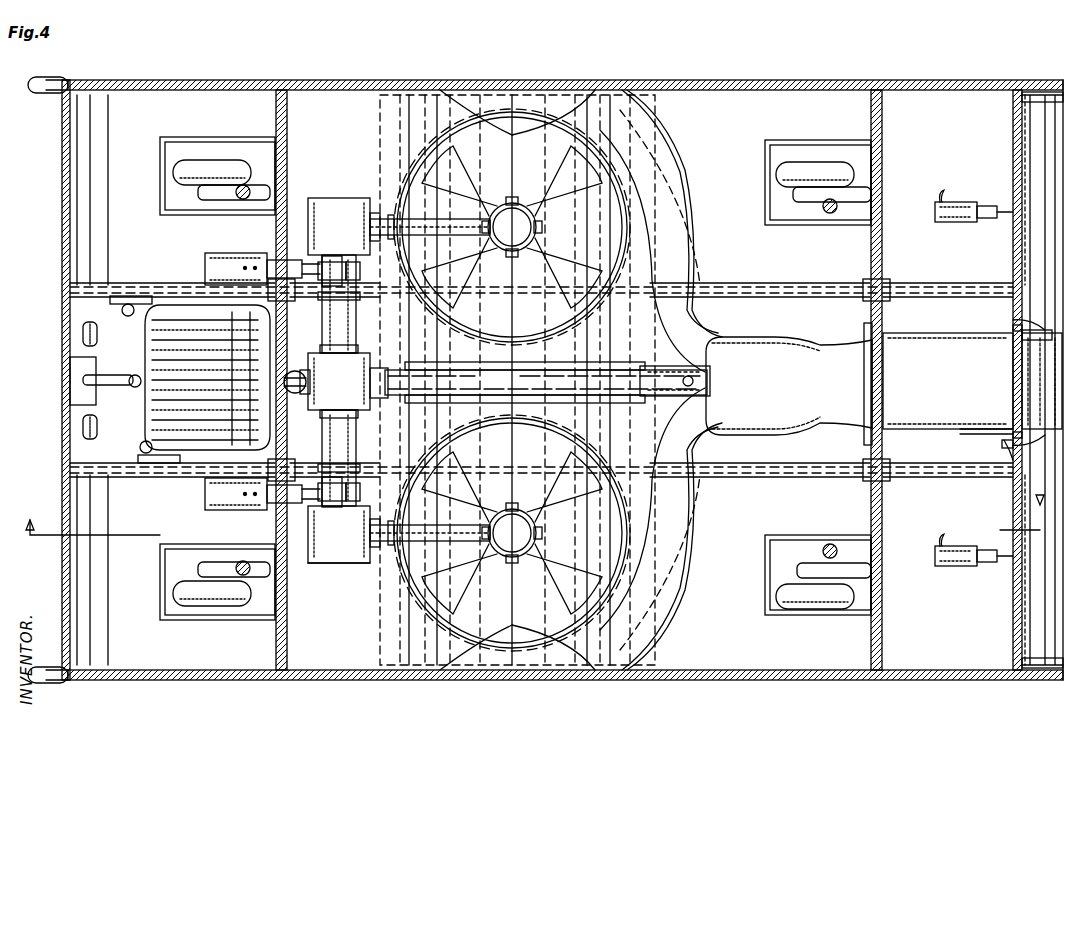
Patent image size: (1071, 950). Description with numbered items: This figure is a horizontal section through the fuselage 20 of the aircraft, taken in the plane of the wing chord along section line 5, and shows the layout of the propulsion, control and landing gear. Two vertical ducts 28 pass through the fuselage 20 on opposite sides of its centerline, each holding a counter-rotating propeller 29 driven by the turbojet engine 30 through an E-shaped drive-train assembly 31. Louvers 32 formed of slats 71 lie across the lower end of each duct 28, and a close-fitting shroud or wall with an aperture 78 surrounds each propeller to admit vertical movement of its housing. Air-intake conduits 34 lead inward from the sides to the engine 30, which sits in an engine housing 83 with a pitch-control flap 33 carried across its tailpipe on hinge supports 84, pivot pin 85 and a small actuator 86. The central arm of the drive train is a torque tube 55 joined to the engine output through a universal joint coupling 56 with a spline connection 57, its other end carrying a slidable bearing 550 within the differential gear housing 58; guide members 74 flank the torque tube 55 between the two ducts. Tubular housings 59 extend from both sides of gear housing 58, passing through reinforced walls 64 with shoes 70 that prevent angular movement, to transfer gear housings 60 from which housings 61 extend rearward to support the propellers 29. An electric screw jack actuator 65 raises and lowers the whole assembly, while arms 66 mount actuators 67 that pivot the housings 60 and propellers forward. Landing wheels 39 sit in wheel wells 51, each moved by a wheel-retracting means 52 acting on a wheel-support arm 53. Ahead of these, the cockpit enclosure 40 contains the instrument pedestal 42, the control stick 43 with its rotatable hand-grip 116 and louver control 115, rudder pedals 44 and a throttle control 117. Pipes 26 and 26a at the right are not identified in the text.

The fuselage 20 is at (60, 242).
The section line 5 is at (540, 512).
The pipe 26 is at (1030, 160).
The motor 26a is at (955, 220).
The duct 28 is at (620, 202).
The propeller 29 is at (532, 232).
The turbojet engine 30 is at (948, 381).
The drive-train assembly 31 is at (352, 570).
The louvers 32 is at (610, 185).
The pitch control flap 33 is at (1032, 378).
The air-intake conduit 34 is at (595, 92).
The landing wheel 39 is at (222, 165).
The cockpit enclosure 40 is at (110, 350).
The instrument pedestal 42 is at (70, 413).
The control stick 43 is at (128, 382).
The rudder pedals 44 is at (98, 333).
The wheel well 51 is at (207, 126).
The wheel-retracting means 52 is at (260, 185).
The wheel-support arm 53 is at (265, 203).
The torque tube 55 is at (546, 382).
The coupling 550 is at (385, 372).
The universal joint coupling means 56 is at (722, 402).
The spline connection 57 is at (650, 380).
The differential gear housing 58 is at (364, 378).
The tubular housing 59 is at (332, 310).
The transfer gear housing 60 is at (352, 186).
The tubular housing 61 is at (436, 228).
The reinforced wall 64 is at (372, 260).
The electric screw jack actuator 65 is at (295, 365).
The forwardly extending arm 66 is at (316, 268).
The actuator 67 is at (215, 262).
The shoe 70 is at (358, 297).
The louver slats 71 is at (515, 135).
The guide 74 is at (587, 370).
The aperture 78 is at (400, 226).
The engine housing 83 is at (978, 430).
The hinge support 84 is at (1010, 332).
The pivot pin 85 is at (1032, 335).
The actuator 86 is at (1004, 452).
The control 115 is at (130, 298).
The rotatable hand-grip 116 is at (135, 378).
The throttle control 117 is at (147, 455).